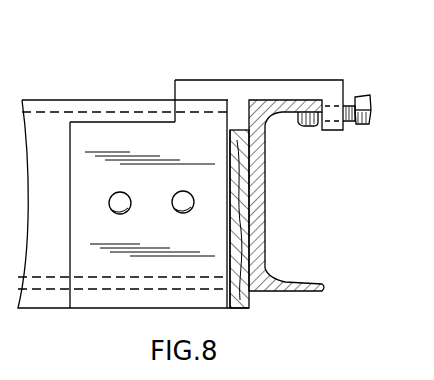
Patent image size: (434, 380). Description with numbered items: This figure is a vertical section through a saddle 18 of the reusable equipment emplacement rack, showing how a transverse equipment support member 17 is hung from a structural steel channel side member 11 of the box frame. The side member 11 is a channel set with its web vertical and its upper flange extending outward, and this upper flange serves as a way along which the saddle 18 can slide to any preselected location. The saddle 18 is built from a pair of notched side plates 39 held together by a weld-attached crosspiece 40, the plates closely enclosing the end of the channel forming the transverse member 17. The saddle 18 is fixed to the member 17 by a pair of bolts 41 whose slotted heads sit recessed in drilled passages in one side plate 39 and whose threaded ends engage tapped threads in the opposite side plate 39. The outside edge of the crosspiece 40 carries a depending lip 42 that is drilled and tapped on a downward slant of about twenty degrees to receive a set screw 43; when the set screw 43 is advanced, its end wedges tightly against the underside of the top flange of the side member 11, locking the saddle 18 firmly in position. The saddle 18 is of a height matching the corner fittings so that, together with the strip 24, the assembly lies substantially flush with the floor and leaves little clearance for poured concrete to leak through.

The structural steel channel side member 11 is at (262, 193).
The transverse equipment support member 17 is at (122, 108).
The saddle 18 is at (163, 76).
The strip 24 is at (242, 222).
The notched side plate 39 is at (163, 147).
The crosspiece 40 is at (217, 87).
The bolt 41 is at (178, 210).
The depending lip 42 is at (343, 128).
The set screw 43 is at (366, 98).